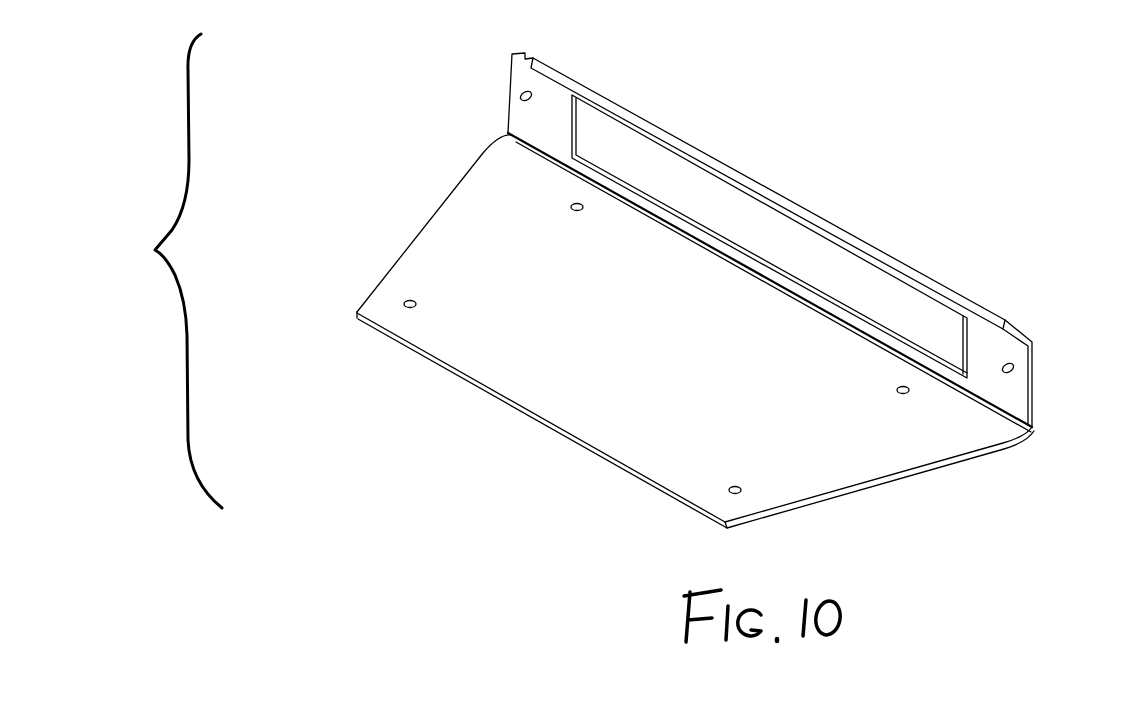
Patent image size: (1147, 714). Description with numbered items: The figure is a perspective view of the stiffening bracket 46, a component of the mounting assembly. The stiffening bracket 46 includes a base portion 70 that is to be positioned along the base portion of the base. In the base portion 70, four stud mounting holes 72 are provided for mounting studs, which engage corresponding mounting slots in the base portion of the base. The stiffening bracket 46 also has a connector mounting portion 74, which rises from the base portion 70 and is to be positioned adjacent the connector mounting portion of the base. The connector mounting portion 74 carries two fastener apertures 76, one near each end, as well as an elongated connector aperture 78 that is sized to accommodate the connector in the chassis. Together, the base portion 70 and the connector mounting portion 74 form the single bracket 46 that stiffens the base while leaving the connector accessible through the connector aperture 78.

The stiffening bracket 46 is at (147, 271).
The base portion 70 is at (672, 377).
The stud mounting holes 72 is at (408, 309).
The connector mounting portion 74 is at (977, 347).
The fastener apertures 76 is at (531, 95).
The connector aperture 78 is at (752, 220).